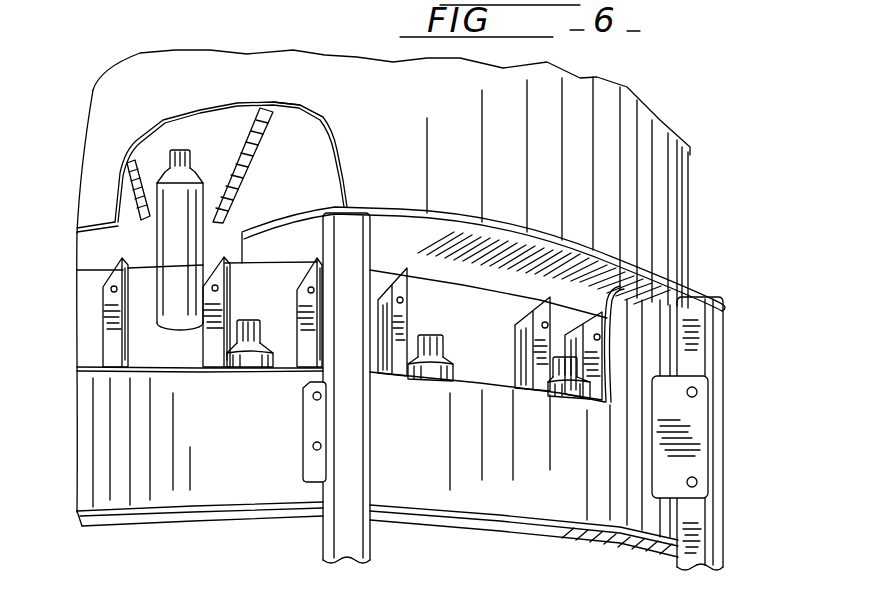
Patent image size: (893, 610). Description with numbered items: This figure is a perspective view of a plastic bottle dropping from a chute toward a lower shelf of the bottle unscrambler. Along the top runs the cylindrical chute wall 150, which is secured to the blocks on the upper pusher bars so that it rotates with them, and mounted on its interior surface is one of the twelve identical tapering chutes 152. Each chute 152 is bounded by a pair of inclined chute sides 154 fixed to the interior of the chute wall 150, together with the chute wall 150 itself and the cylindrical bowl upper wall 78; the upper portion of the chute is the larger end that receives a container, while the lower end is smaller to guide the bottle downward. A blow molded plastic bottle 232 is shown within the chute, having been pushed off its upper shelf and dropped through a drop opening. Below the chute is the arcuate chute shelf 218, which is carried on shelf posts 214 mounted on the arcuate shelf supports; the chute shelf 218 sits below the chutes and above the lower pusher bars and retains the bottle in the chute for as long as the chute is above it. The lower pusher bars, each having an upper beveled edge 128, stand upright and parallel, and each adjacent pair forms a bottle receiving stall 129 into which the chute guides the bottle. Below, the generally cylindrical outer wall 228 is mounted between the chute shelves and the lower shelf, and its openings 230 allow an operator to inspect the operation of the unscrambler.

The cylindrical chute wall 150 is at (620, 117).
The tapering chute 152 is at (212, 148).
The cylindrical bowl upper wall 78 is at (283, 120).
The inclined chute side 154 is at (127, 183).
The blow molded plastic bottle 232 is at (167, 238).
The opening 230 is at (193, 353).
The bottle receiving stall 129 is at (497, 360).
The upper beveled edge 128 is at (472, 293).
The chute shelf 218 is at (643, 277).
The shelf post 214 is at (345, 522).
The outer wall 228 is at (572, 500).